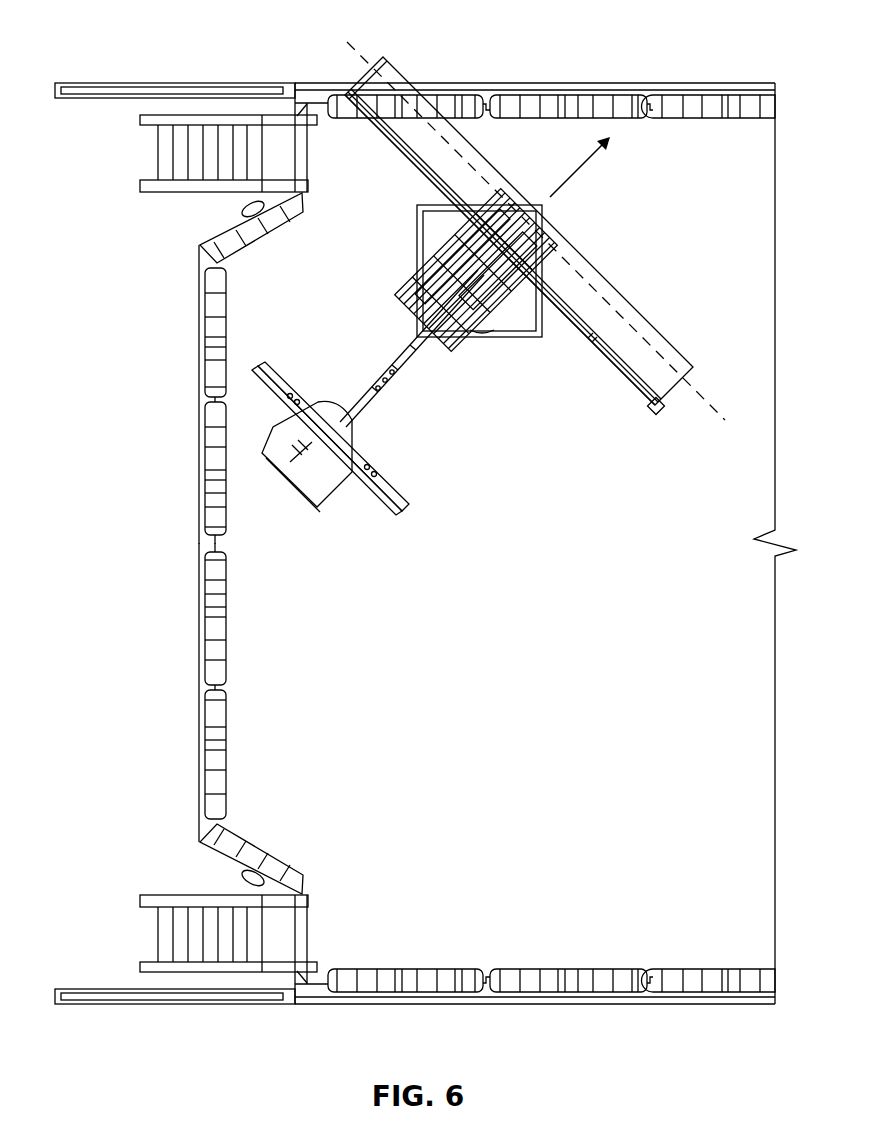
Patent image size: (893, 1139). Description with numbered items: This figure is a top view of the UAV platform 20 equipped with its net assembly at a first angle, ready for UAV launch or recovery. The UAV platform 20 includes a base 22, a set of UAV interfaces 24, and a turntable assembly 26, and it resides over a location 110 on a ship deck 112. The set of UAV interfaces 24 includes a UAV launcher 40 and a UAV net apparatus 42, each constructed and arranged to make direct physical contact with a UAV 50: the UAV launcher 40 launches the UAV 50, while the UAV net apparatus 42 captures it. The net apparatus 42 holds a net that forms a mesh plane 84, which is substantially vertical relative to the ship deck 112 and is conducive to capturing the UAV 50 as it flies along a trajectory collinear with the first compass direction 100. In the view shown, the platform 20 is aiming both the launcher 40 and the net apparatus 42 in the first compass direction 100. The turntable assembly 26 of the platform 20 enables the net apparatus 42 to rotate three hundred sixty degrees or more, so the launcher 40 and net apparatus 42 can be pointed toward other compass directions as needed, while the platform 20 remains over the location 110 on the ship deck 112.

The UAV platform 20 is at (268, 77).
The base 22 is at (417, 234).
The UAV interfaces 24 is at (632, 273).
The turntable assembly 26 is at (491, 347).
The UAV launcher 40 is at (396, 335).
The UAV net apparatus 42 is at (620, 388).
The UAV 50 is at (283, 488).
The mesh plane 84 is at (700, 394).
The first compass direction 100 is at (578, 172).
The location 110 is at (441, 386).
The ship deck 112 is at (466, 622).